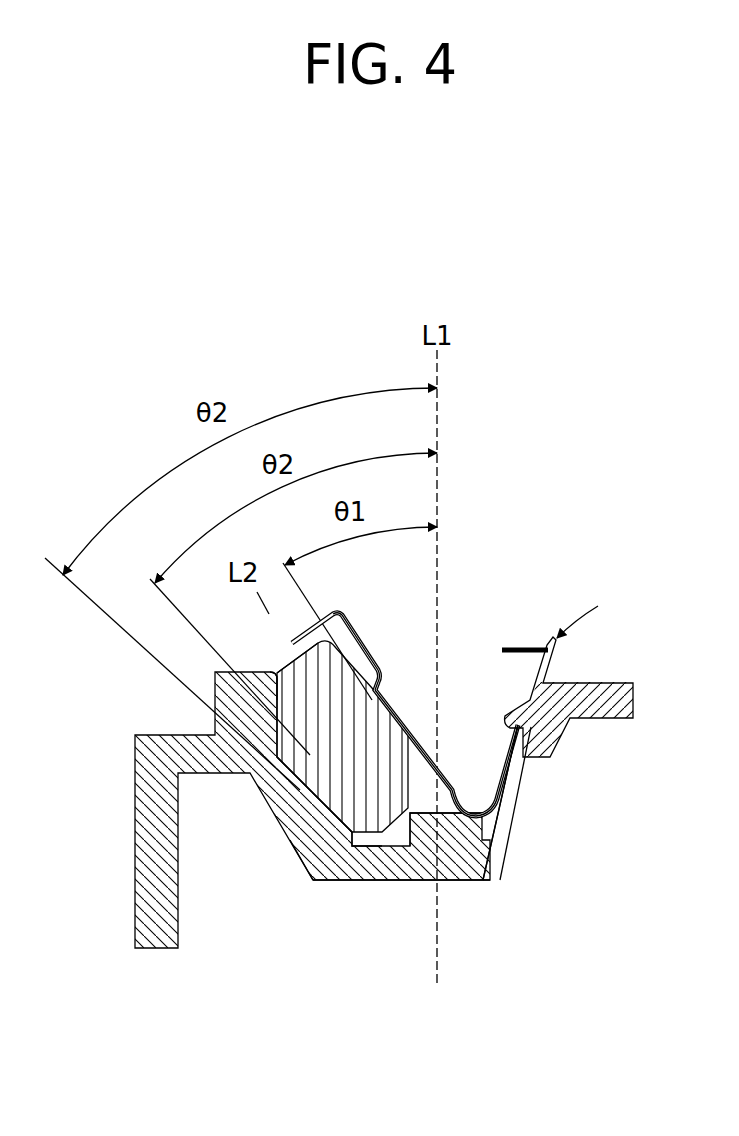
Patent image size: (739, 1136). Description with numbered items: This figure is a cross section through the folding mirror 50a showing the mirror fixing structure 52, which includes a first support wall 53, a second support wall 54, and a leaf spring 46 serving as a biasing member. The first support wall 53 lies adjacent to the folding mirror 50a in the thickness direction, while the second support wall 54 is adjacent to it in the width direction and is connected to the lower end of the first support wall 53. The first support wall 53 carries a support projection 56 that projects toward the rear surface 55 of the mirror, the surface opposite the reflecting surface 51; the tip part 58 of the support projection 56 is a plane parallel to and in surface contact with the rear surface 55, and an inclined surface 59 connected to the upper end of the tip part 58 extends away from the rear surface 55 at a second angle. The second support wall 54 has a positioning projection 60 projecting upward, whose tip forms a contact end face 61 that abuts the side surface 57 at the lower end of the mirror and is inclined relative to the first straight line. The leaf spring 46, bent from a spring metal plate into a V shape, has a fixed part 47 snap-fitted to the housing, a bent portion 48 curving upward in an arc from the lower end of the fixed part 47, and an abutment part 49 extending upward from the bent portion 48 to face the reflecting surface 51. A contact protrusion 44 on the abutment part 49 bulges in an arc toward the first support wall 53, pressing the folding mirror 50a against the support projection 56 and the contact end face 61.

The contact protrusion 44 is at (378, 695).
The leaf spring 46 is at (553, 663).
The fixed part 47 is at (518, 760).
The bent portion 48 is at (490, 817).
The abutment part 49 is at (450, 775).
The folding mirror 50a is at (340, 635).
The reflecting surface 51 is at (362, 652).
The mirror fixing structure 52 is at (588, 610).
The first support wall 53 is at (282, 795).
The second support wall 54 is at (473, 887).
The rear surface 55 is at (372, 685).
The support projection 56 is at (258, 685).
The side surface 57 is at (450, 792).
The tip part 58 is at (300, 657).
The inclined surface 59 is at (268, 668).
The positioning projection 60 is at (393, 887).
The contact end face 61 is at (368, 883).